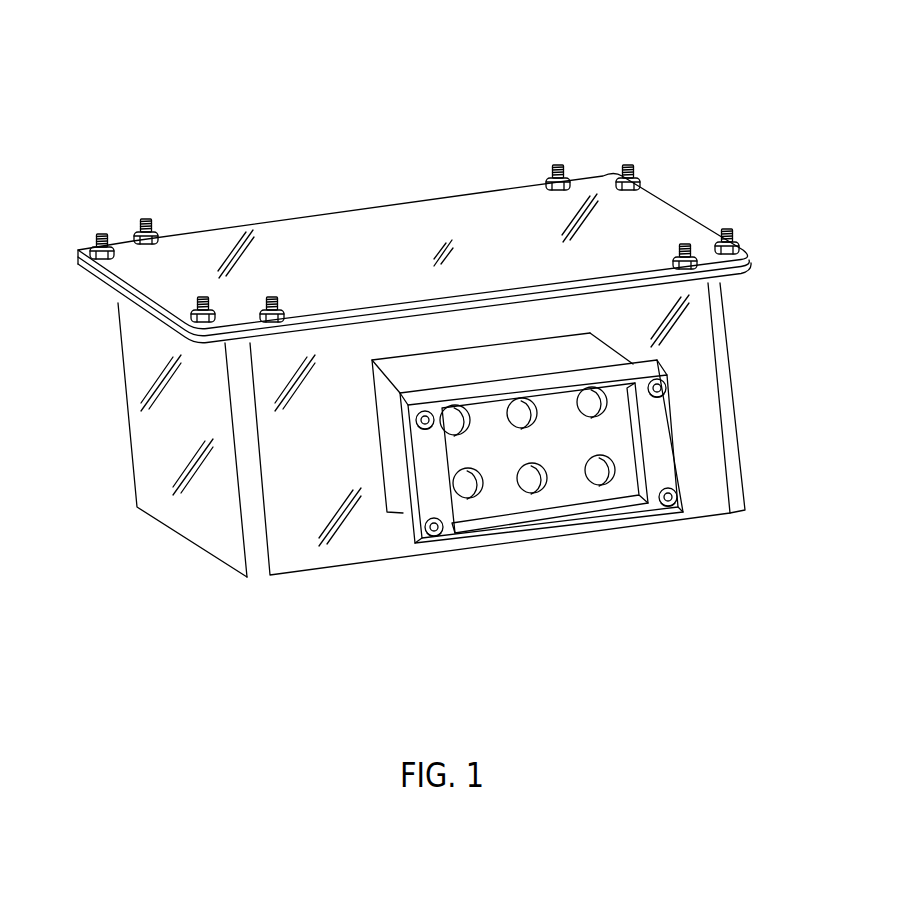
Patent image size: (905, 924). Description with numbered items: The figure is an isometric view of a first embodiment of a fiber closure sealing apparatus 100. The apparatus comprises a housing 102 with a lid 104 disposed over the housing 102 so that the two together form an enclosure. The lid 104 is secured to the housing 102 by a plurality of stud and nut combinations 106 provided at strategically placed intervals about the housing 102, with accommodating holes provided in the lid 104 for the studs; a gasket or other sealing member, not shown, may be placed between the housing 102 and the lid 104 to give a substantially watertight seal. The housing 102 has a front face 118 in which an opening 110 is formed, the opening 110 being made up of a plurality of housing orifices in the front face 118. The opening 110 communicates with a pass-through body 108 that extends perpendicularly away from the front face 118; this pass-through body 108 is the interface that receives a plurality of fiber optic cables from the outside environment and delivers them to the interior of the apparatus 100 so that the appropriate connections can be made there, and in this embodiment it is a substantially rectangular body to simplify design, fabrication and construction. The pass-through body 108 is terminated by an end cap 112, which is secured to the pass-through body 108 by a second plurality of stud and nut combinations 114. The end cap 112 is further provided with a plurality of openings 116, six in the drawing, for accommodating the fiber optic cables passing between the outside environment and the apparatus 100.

The fiber closure sealing apparatus 100 is at (257, 81).
The housing 102 is at (143, 443).
The lid 104 is at (377, 220).
The stud and nut combinations 106 is at (268, 296).
The pass-through body 108 is at (403, 513).
The opening 110 is at (383, 468).
The end cap 112 is at (613, 513).
The second plurality of stud and nut combinations 114 is at (430, 425).
The openings 116 is at (533, 490).
The front face 118 is at (327, 460).